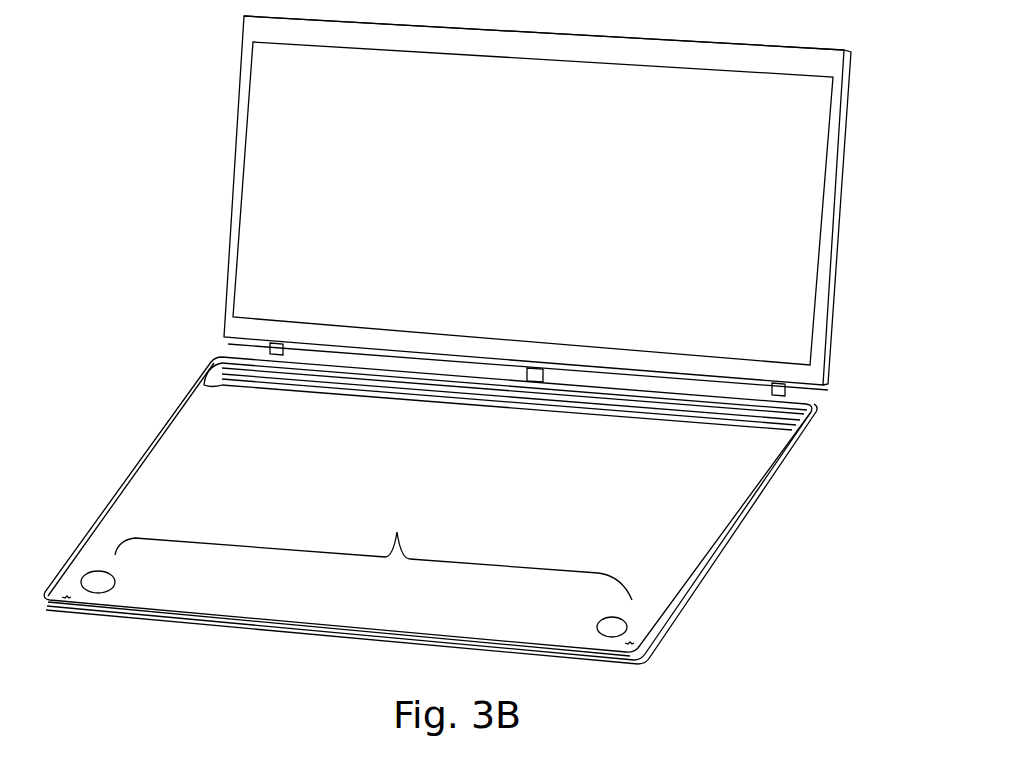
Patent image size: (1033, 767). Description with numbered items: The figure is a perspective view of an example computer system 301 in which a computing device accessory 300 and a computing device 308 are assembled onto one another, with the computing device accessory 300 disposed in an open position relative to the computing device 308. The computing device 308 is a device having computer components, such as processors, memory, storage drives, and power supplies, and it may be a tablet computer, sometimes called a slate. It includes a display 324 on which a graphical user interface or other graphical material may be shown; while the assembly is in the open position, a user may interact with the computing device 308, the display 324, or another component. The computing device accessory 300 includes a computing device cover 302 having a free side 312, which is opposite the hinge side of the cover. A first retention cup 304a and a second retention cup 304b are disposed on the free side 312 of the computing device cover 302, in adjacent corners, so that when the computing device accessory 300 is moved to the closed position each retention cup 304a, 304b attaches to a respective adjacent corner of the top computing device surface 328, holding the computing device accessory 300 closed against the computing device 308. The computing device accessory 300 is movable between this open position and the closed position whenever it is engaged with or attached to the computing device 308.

The computing device accessory 300 is at (411, 516).
The computer system 301 is at (514, 201).
The computing device cover 302 is at (115, 523).
The first retention cup 304a is at (620, 627).
The second retention cup 304b is at (105, 588).
The computing device 308 is at (574, 201).
The free side 312 is at (373, 549).
The display 324 is at (538, 137).
The top computing device surface 328 is at (722, 52).